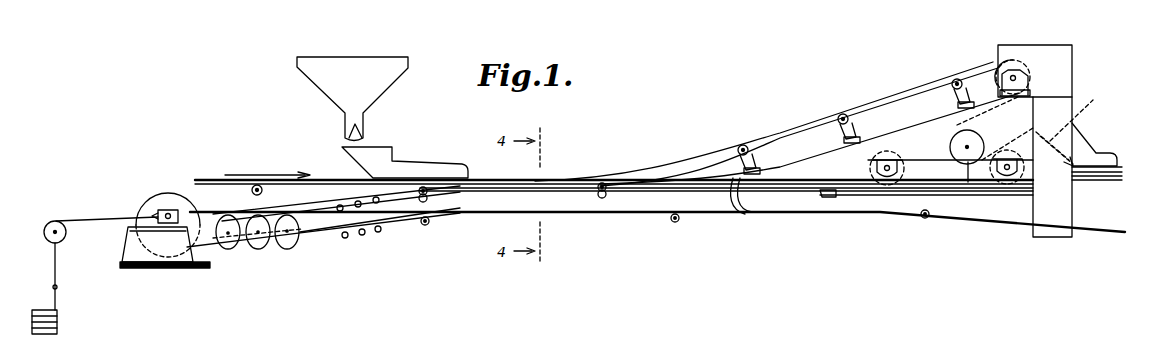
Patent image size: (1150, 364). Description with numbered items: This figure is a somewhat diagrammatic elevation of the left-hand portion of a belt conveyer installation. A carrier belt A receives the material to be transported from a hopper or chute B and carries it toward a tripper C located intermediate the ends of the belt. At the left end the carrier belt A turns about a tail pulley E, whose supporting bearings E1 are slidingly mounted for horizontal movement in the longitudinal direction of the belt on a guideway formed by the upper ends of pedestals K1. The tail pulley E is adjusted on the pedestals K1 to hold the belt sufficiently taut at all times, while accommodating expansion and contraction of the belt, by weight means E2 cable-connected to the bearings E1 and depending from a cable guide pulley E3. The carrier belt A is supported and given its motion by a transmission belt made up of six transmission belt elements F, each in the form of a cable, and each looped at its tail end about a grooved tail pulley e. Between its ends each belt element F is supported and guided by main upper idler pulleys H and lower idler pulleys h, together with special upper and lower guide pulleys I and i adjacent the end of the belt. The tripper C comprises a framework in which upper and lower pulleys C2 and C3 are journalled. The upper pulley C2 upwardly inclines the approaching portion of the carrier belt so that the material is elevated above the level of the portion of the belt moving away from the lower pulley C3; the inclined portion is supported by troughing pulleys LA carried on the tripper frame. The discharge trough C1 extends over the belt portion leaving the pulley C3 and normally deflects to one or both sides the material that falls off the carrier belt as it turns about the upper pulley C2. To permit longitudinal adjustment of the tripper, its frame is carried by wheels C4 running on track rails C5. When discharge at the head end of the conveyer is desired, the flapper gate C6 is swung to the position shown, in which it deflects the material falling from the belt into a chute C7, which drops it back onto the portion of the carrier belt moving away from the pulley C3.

The tail pulley E is at (152, 200).
The supporting bearings E1 is at (180, 213).
The weight means E2 is at (58, 318).
The cable guide pulley E3 is at (60, 221).
The pedestals K1 is at (165, 247).
The tail pulley e is at (284, 249).
The upper guide pulleys I is at (370, 199).
The lower guide pulleys i is at (378, 232).
The hopper or chute B is at (352, 99).
The main upper idler pulleys H is at (601, 182).
The lower idler pulleys h is at (427, 225).
The carrier belt A is at (763, 142).
The troughing pulleys LA is at (957, 80).
The tripper C is at (973, 130).
The transmission belt elements F is at (749, 204).
The track rails C5 is at (826, 200).
The wheels C4 is at (887, 186).
The lower pulley C3 is at (968, 182).
The upper pulley C2 is at (1000, 70).
The discharge trough C1 is at (1035, 141).
The flapper gate C6 is at (1073, 127).
The chute C7 is at (1088, 154).